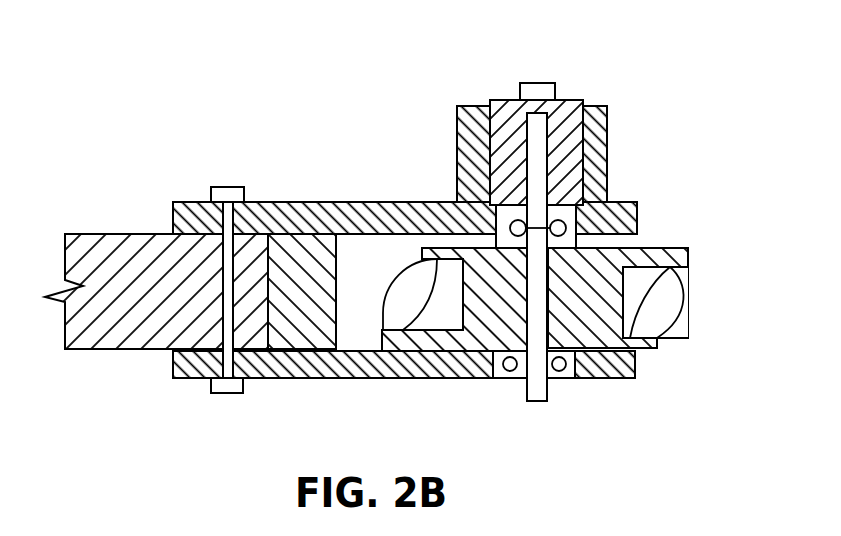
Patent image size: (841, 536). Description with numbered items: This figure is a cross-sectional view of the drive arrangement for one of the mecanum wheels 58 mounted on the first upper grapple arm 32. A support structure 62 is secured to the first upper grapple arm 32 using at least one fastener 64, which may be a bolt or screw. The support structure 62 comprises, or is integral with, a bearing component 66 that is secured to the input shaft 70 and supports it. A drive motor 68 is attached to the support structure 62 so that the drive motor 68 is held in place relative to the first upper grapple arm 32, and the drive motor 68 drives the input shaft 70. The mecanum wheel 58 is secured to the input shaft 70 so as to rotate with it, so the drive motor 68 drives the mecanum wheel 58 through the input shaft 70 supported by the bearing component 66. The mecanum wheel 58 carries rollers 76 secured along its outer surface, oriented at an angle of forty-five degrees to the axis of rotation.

The first upper grapple arm 32 is at (120, 250).
The mecanum wheel 58 is at (627, 253).
The support structure 62 is at (298, 217).
The fastener 64 is at (225, 392).
The bearing component 66 is at (566, 228).
The drive motor 68 is at (565, 115).
The input shaft 70 is at (542, 386).
The rollers 76 is at (400, 320).